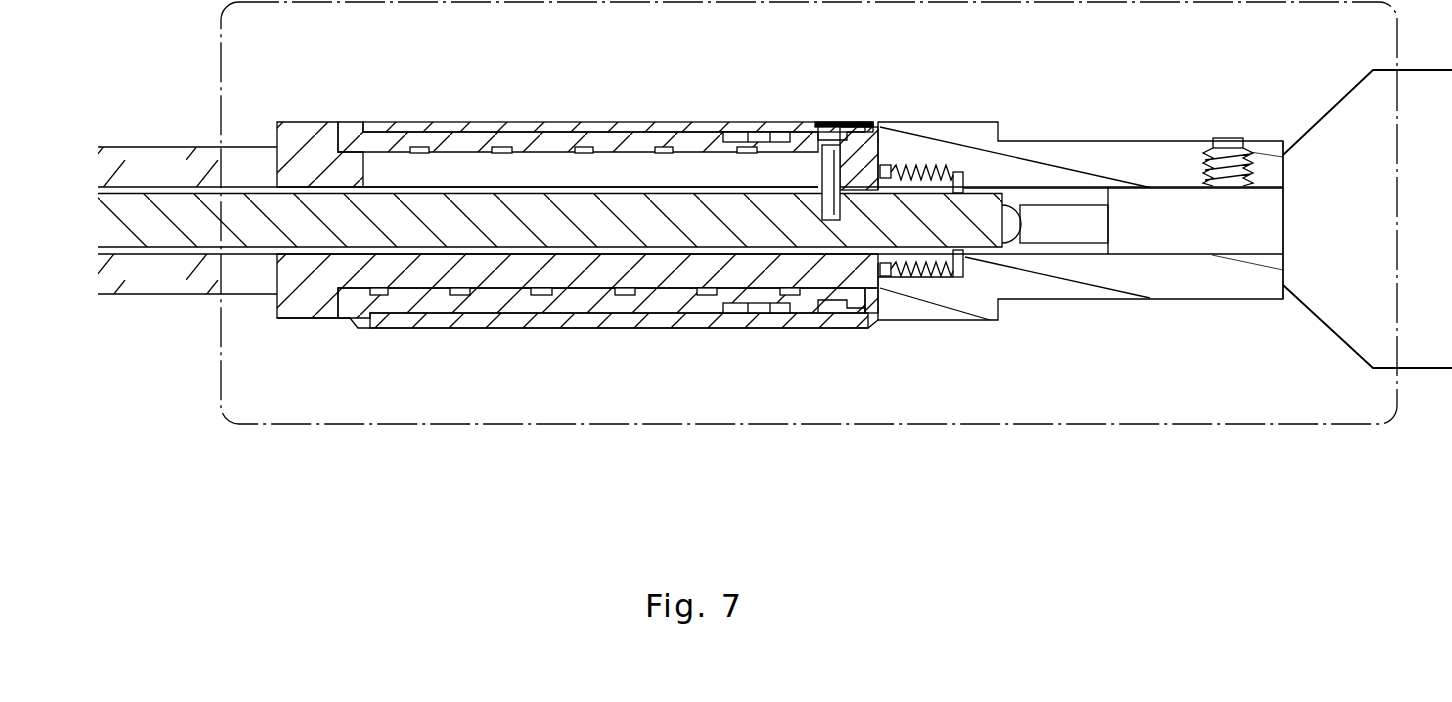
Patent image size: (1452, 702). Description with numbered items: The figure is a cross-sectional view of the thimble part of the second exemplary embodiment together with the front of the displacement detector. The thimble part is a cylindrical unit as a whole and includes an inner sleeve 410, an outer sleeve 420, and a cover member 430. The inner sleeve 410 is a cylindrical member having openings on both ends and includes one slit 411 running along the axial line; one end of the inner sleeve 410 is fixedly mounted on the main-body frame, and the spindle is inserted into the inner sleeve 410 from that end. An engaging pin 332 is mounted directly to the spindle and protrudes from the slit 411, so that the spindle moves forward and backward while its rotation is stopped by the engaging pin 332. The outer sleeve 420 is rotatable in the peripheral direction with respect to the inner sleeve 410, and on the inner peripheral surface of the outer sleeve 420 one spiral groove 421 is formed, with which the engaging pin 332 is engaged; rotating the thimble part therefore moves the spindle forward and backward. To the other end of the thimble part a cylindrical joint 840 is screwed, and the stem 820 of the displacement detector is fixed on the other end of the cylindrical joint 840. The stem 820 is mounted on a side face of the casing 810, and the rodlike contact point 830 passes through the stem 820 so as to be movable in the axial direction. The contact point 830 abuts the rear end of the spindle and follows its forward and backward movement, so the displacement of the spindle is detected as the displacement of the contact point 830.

The engaging pin 332 is at (865, 122).
The inner sleeve 410 is at (312, 310).
The slit 411 is at (623, 165).
The outer sleeve 420 is at (518, 137).
The spiral groove 421 is at (672, 148).
The cover member 430 is at (395, 125).
The casing 810 is at (1342, 114).
The stem 820 is at (1195, 245).
The contact point 830 is at (1078, 232).
The cylindrical joint 840 is at (1027, 290).